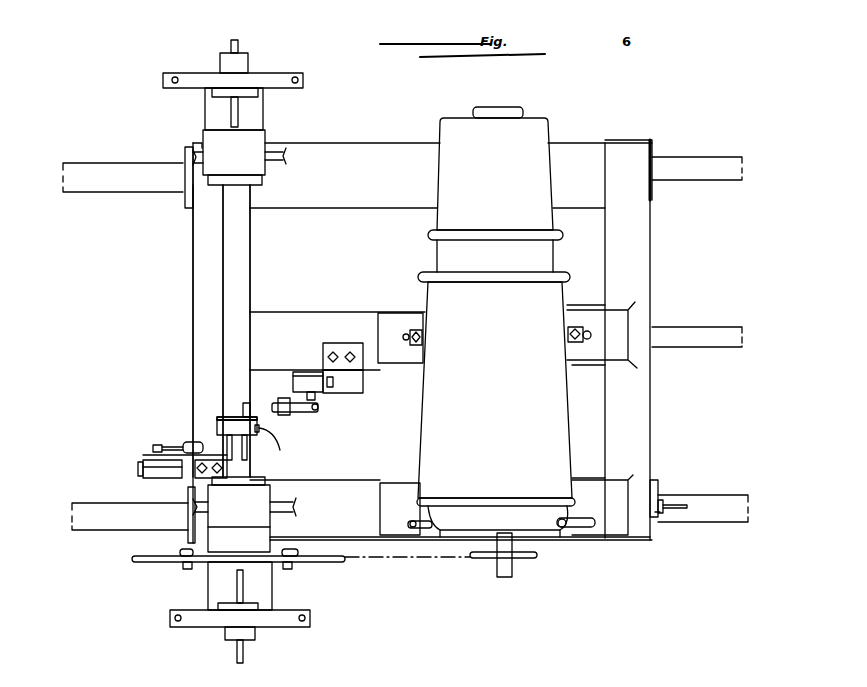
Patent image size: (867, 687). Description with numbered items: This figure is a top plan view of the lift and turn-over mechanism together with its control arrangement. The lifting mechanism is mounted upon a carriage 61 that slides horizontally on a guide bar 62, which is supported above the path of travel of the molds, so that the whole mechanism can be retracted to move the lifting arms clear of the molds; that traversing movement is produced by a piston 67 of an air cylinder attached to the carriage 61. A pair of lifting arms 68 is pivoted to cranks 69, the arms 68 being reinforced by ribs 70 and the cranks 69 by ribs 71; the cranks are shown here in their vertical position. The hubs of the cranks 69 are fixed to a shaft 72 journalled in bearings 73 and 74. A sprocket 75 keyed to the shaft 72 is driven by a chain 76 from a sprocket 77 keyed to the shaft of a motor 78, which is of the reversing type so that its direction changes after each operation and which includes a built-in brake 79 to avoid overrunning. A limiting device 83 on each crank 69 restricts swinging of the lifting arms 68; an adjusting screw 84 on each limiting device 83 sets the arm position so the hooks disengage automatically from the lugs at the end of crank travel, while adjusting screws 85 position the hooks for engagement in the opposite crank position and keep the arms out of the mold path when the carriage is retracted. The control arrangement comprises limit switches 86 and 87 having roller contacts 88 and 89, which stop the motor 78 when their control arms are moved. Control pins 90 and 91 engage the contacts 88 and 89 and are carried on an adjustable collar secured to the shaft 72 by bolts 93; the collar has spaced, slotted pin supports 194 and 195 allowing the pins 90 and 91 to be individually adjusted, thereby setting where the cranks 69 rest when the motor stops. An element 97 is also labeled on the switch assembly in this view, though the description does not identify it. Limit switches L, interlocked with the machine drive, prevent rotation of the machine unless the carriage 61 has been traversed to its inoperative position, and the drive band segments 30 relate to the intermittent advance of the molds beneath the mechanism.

The curved segments 30 is at (685, 505).
The carriage 61 is at (347, 152).
The guide bar 62 is at (675, 163).
The piston 67 is at (705, 335).
The lifting arms 68 is at (245, 61).
The cranks 69 is at (250, 92).
The ribs 70 is at (236, 46).
The ribs 71 is at (238, 117).
The shaft 72 is at (240, 297).
The bearing 73 is at (262, 503).
The bearing 74 is at (252, 150).
The sprocket 75 is at (350, 560).
The chain 76 is at (465, 558).
The sprocket 77 is at (518, 557).
The motor 78 is at (562, 431).
The brake 79 is at (540, 133).
The limiting device 83 is at (203, 75).
The adjusting screw 84 is at (175, 77).
The adjusting screws 85 is at (298, 78).
The limit switch 86 is at (308, 380).
The limit switch 87 is at (150, 458).
The roller contact 88 is at (273, 427).
The roller contact 89 is at (195, 440).
The control pin 90 is at (246, 410).
The control pin 91 is at (256, 449).
The bolts 93 is at (278, 445).
The switch 97 is at (225, 428).
The pin support 194 is at (222, 418).
The pin support 195 is at (233, 449).
The limit switches L is at (668, 510).